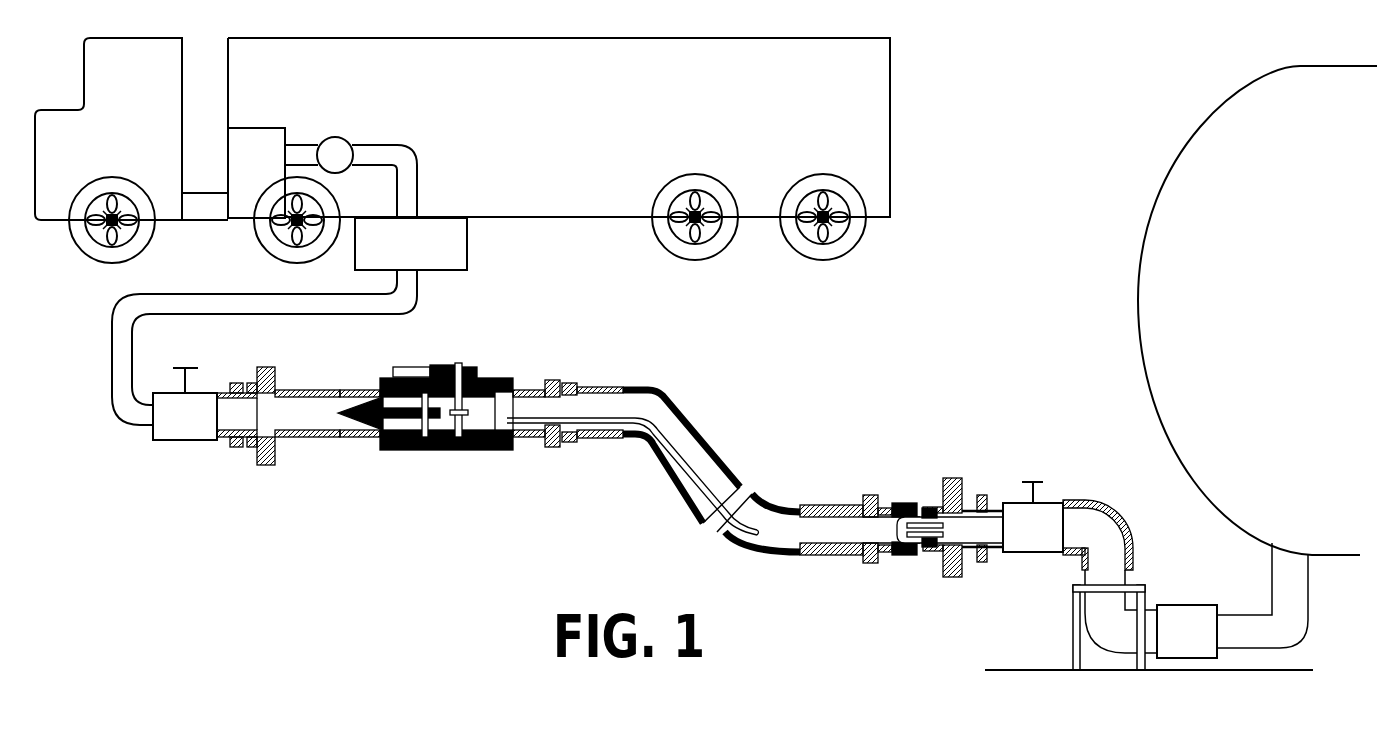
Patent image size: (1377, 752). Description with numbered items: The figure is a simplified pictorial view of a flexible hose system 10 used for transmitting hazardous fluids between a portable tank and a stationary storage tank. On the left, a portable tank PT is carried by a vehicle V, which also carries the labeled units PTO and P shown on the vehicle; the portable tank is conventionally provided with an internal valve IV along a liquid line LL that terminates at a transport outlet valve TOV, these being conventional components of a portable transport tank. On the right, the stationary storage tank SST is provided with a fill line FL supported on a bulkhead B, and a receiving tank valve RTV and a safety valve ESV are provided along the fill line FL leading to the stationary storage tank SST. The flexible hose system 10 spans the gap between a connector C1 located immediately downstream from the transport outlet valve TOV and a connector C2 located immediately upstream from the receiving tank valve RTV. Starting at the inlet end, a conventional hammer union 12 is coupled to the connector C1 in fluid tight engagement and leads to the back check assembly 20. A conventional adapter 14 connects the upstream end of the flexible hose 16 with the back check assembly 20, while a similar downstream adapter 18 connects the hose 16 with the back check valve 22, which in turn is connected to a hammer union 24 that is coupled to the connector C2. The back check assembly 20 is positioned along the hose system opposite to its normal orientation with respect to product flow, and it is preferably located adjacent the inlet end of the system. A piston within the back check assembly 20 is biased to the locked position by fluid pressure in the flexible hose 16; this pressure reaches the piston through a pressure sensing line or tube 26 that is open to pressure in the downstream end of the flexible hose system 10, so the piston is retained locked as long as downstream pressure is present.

The flexible hose system 10 is at (758, 417).
The hammer union 12 is at (273, 370).
The adapter 14 is at (554, 378).
The flexible hose 16 is at (687, 425).
The downstream adapter 18 is at (820, 505).
The back check assembly 20 is at (437, 360).
The back check valve 22 is at (902, 507).
The hammer union 24 is at (950, 573).
The pressure sensing line 26 is at (687, 480).
The connector C1 is at (237, 445).
The connector C2 is at (980, 562).
The bulkhead B is at (1145, 587).
The liquid line LL is at (223, 307).
The fill line FL is at (1308, 620).
The vehicle V is at (187, 150).
The portable tank PT is at (559, 149).
The power take-off PTO is at (256, 173).
The pump P is at (351, 177).
The internal valve IV is at (411, 244).
The transport outlet valve TOV is at (185, 404).
The receiving tank valve RTV is at (1033, 517).
The safety valve ESV is at (1187, 631).
The stationary storage tank SST is at (1257, 310).